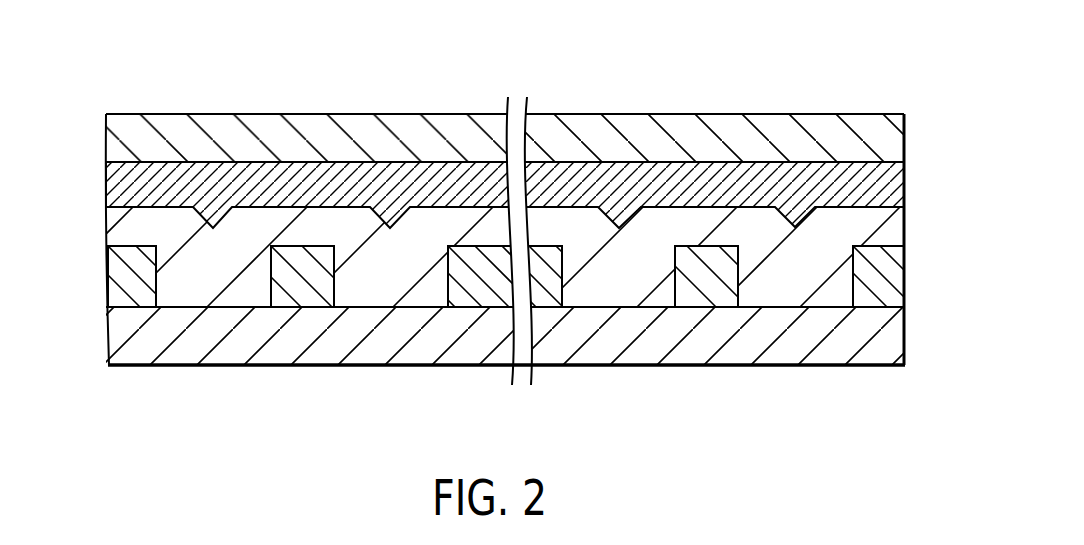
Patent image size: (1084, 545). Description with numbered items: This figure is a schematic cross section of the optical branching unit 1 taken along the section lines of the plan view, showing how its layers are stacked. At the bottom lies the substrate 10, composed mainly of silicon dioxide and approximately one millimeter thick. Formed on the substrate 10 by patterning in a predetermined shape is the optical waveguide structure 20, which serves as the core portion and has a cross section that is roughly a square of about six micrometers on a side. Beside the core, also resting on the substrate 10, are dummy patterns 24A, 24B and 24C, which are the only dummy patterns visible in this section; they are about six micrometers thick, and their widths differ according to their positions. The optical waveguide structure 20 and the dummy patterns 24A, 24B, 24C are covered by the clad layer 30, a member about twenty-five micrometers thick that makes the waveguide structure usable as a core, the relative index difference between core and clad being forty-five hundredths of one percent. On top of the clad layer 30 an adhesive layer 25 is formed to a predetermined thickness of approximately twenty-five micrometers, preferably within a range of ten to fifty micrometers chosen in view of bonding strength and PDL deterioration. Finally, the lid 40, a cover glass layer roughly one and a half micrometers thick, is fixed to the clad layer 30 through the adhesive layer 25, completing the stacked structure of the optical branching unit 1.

The optical branching unit 1 is at (837, 91).
The substrate 10 is at (118, 338).
The optical waveguide structure 20 is at (298, 287).
The dummy pattern 24A is at (117, 293).
The dummy pattern 24B is at (876, 284).
The dummy pattern 24C is at (464, 297).
The adhesive layer 25 is at (116, 191).
The clad layer 30 is at (371, 297).
The lid 40 is at (123, 133).